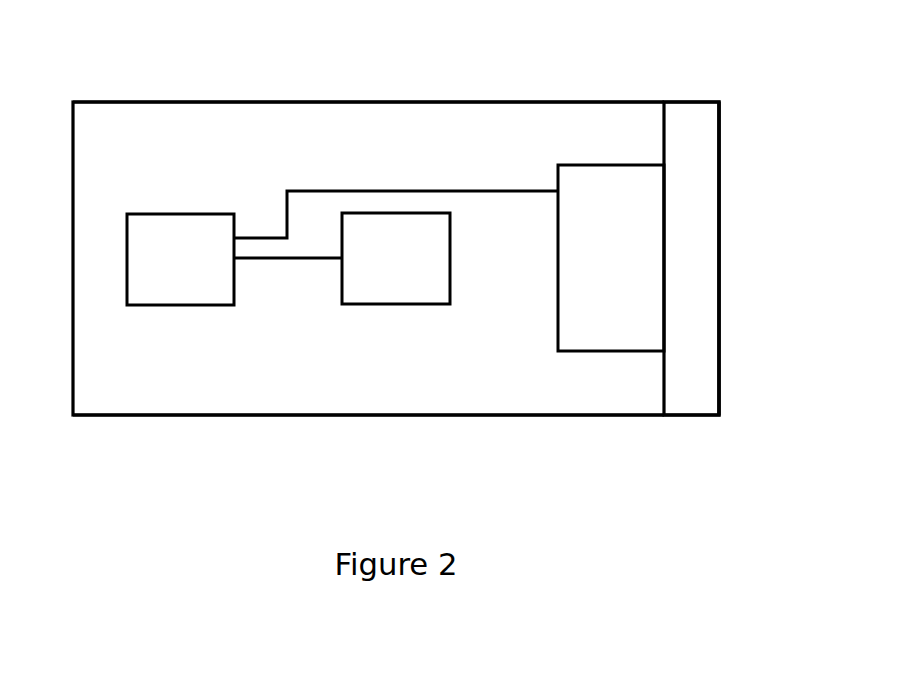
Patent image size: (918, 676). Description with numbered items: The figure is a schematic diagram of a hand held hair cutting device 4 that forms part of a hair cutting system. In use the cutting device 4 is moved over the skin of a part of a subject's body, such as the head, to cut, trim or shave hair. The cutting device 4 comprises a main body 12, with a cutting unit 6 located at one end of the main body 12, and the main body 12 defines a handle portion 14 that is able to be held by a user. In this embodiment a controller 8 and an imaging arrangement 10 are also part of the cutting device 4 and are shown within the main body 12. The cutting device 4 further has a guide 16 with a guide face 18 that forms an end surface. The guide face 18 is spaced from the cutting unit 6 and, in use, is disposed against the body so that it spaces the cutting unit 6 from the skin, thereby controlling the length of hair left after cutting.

The hand held hair cutting device 4 is at (100, 101).
The cutting unit 6 is at (609, 310).
The controller 8 is at (183, 285).
The imaging arrangement 10 is at (399, 280).
The main body 12 is at (207, 101).
The handle portion 14 is at (124, 417).
The guide 16 is at (689, 385).
The guide face 18 is at (720, 285).